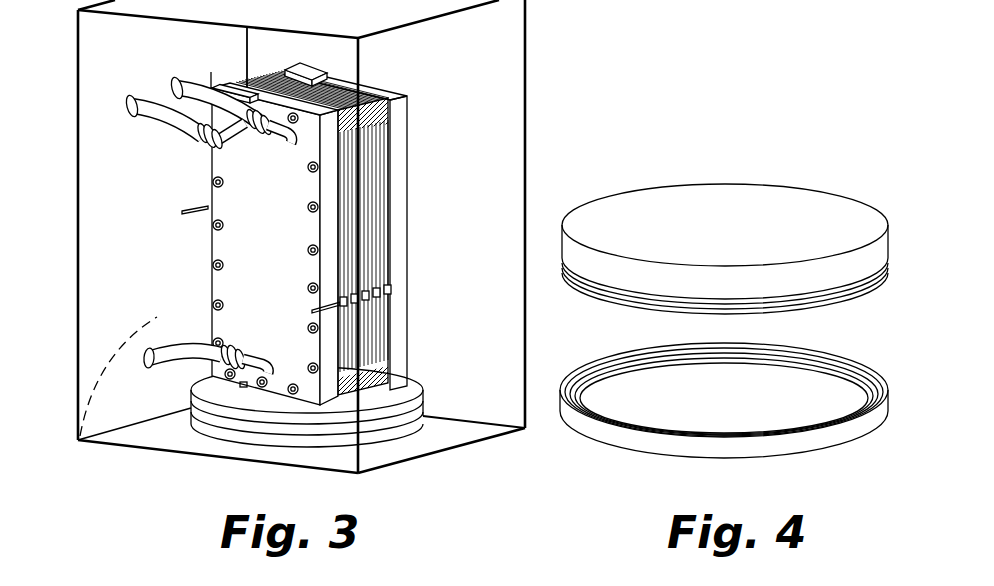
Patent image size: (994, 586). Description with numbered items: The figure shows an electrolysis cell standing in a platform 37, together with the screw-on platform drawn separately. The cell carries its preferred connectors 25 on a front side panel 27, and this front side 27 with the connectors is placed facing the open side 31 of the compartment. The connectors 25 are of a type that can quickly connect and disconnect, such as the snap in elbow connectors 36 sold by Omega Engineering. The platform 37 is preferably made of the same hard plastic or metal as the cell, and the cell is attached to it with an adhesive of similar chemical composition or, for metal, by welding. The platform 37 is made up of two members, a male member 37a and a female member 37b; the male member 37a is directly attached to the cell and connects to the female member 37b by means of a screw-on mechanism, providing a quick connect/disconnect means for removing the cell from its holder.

In FIG. 3, the connectors 25 is at (204, 135).
In FIG. 3, the front side panel 27 is at (277, 192).
In FIG. 3, the open side 31 is at (78, 440).
In FIG. 3, the snap in elbow connectors 36 is at (270, 147).
In FIG. 3, the platform 37 is at (280, 413).
In FIG. 4, the male member 37a is at (735, 203).
In FIG. 4, the female member 37b is at (833, 442).